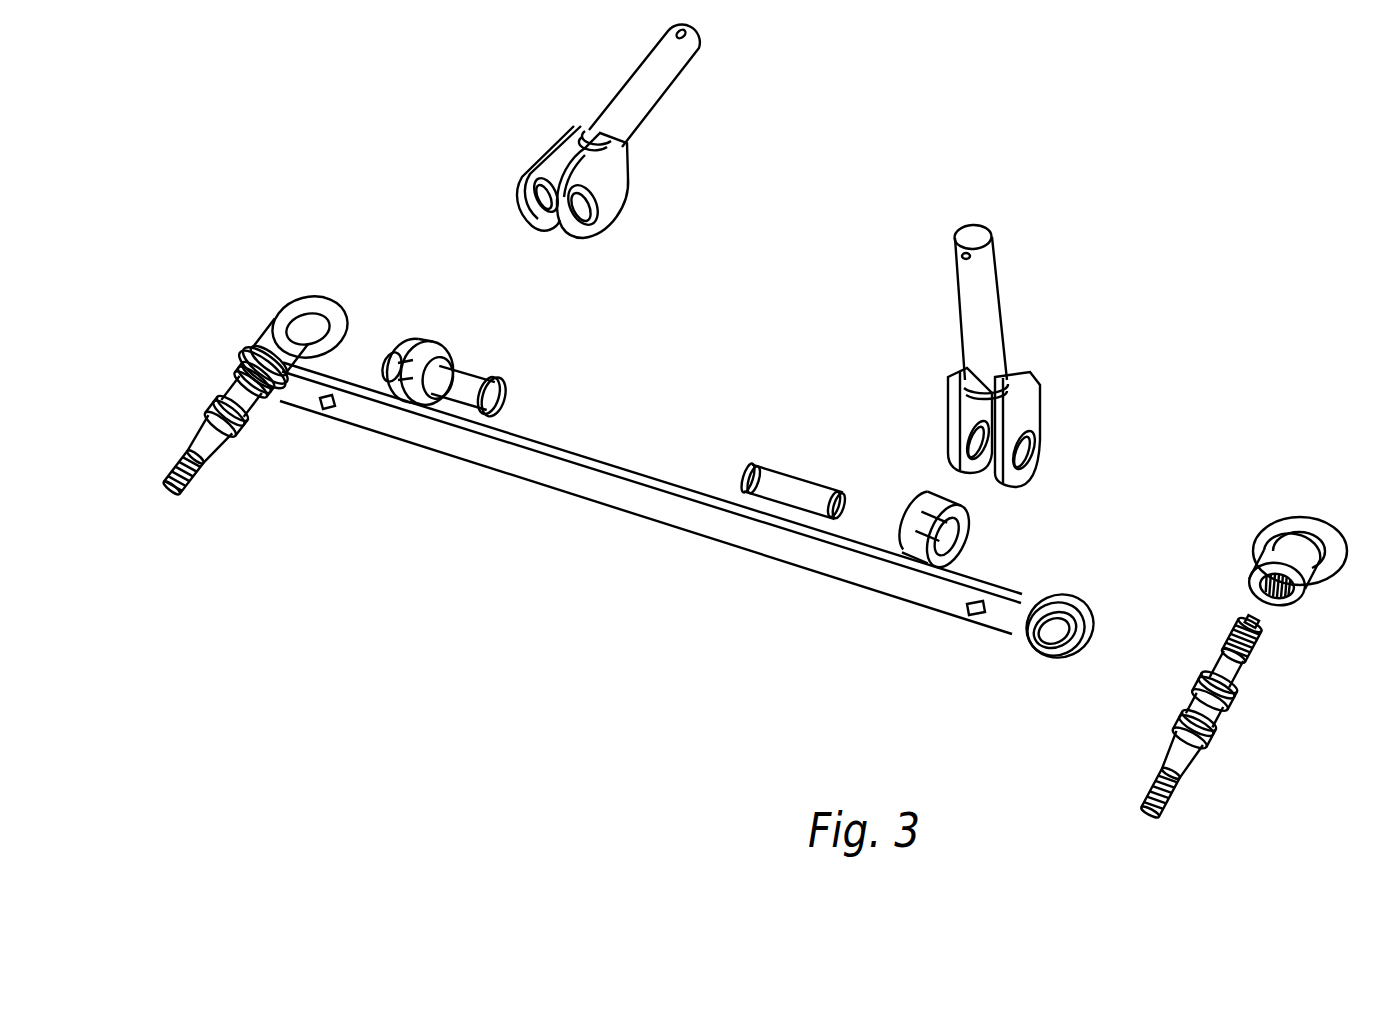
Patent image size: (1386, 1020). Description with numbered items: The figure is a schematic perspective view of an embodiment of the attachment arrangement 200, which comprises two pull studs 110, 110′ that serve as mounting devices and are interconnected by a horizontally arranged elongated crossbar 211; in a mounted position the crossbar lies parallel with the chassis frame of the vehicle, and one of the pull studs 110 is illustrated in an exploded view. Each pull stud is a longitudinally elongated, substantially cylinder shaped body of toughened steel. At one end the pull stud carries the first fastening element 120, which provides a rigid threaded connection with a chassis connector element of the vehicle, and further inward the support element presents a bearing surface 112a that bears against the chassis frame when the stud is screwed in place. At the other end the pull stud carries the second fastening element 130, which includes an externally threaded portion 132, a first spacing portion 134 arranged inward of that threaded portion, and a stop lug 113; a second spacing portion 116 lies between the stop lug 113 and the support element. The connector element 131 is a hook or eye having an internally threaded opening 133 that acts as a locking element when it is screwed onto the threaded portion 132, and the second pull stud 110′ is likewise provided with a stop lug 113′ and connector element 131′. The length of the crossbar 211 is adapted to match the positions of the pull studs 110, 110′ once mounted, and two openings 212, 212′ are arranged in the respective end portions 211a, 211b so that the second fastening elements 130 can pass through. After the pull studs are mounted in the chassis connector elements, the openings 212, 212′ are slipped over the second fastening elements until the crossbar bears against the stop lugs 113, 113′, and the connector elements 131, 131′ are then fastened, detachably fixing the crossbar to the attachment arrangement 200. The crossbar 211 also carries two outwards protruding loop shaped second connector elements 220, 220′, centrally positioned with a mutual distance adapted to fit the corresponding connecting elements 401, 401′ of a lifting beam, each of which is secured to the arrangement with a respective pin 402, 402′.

The attachment arrangement 200 is at (390, 216).
The crossbar 211 is at (620, 495).
The end portion of the crossbar 211a is at (1010, 612).
The end portion of the crossbar 211b is at (300, 398).
The opening 212 is at (1043, 650).
The opening 212′ is at (252, 358).
The second connector element 220 is at (960, 530).
The second connector element 220′ is at (450, 358).
The pin 402 is at (797, 478).
The pin 402′ is at (515, 398).
The connecting element of the lifting beam 401 is at (1045, 410).
The connecting element of the lifting beam 401′ is at (640, 183).
The pull stud 110 is at (1203, 549).
The pull stud 110′ is at (198, 352).
The second fastening element 130 is at (1212, 627).
The connector element 131 is at (1308, 525).
The connector element 131′ is at (304, 302).
The threaded portion 132 is at (1265, 650).
The opening 133 is at (1283, 602).
The first spacing portion 134 is at (1248, 684).
The stop lug 113 is at (1215, 680).
The stop lug 113′ is at (243, 380).
The second spacing portion 116 is at (1200, 713).
The bearing surface 112a is at (1190, 724).
The first fastening element 120 is at (1184, 798).